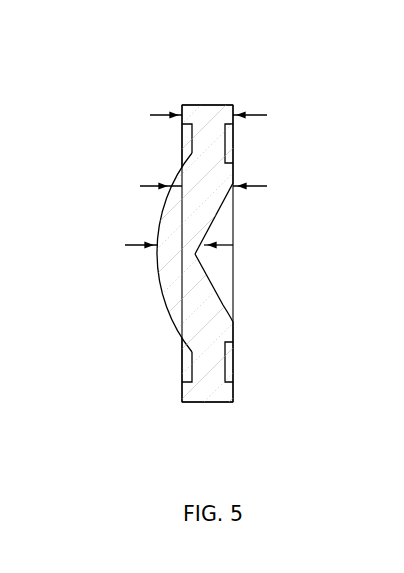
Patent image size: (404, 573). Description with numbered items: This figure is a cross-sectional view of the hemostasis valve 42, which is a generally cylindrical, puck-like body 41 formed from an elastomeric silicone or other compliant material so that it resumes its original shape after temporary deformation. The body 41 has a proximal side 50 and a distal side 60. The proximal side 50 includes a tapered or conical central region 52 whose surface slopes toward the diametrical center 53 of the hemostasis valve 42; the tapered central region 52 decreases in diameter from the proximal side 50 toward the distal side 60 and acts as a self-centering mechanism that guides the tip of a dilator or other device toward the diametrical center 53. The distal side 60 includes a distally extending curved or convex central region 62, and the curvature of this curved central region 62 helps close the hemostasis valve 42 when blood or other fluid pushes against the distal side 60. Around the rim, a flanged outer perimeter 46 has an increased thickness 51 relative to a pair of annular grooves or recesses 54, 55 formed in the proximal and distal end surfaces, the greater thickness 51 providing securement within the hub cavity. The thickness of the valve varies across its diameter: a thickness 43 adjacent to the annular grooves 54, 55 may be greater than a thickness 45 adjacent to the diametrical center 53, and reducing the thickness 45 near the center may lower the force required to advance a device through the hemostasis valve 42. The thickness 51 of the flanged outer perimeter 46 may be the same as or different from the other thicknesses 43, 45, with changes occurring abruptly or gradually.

The hemostasis valve 42 is at (303, 57).
The flanged outer perimeter 46 is at (207, 105).
The body 41 is at (182, 143).
The annular groove 55 is at (191, 127).
The annular groove 54 is at (233, 145).
The thickness of flanged outer perimeter 51 is at (157, 114).
The thickness adjacent annular grooves 43 is at (143, 185).
The curved central region 62 is at (157, 253).
The thickness adjacent diametrical center 45 is at (132, 244).
The diametrical center 53 is at (196, 254).
The tapered central region 52 is at (216, 290).
The proximal side 50 is at (297, 193).
The distal side 60 is at (132, 318).